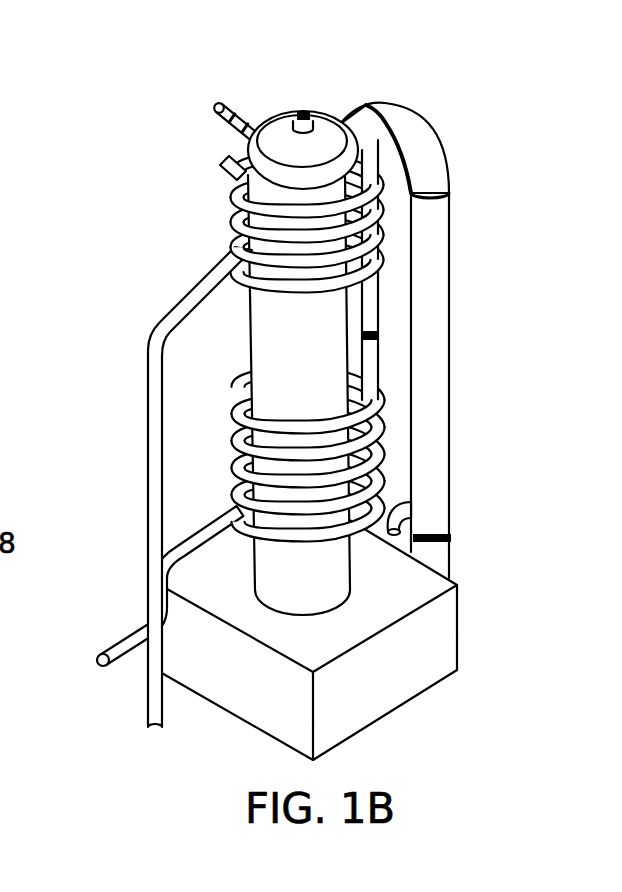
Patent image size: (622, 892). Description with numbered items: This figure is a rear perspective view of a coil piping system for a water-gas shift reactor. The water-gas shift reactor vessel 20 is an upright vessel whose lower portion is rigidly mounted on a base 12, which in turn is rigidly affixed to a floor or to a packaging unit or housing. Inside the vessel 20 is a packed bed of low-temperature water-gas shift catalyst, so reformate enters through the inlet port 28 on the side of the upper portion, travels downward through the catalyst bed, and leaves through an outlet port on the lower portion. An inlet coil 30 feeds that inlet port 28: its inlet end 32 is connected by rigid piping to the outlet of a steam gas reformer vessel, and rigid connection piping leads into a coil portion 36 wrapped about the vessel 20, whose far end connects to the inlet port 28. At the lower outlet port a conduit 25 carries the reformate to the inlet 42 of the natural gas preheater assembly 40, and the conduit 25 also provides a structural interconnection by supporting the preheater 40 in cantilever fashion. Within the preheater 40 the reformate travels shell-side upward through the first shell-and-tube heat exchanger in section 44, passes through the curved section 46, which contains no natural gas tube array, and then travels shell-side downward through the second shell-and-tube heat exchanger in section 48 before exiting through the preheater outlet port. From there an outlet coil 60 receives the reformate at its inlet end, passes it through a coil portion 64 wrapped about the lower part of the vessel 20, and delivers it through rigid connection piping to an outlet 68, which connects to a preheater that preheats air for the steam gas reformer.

The base 12 is at (380, 687).
The water-gas shift reactor vessel 20 is at (318, 368).
The conduit 25 is at (457, 585).
The inlet port 28 is at (232, 155).
The inlet coil 30 is at (228, 460).
The inlet end 32 is at (153, 727).
The coil portion 36 is at (272, 247).
The natural gas preheater assembly 40 is at (474, 311).
The inlet 42 is at (425, 512).
The section 44 is at (433, 393).
The curved section 46 is at (413, 137).
The section 48 is at (370, 290).
The outlet coil 60 is at (201, 484).
The coil portion 64 is at (263, 484).
The outlet 68 is at (98, 665).